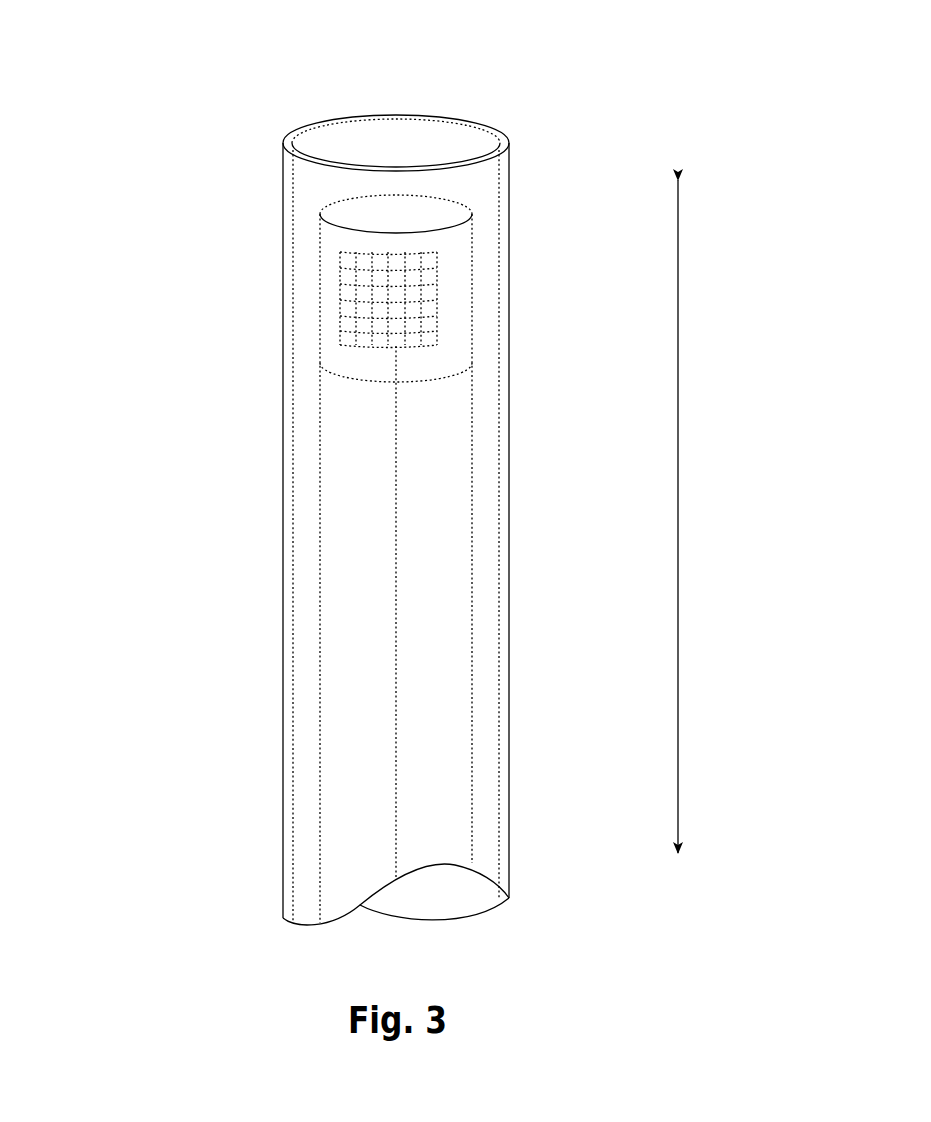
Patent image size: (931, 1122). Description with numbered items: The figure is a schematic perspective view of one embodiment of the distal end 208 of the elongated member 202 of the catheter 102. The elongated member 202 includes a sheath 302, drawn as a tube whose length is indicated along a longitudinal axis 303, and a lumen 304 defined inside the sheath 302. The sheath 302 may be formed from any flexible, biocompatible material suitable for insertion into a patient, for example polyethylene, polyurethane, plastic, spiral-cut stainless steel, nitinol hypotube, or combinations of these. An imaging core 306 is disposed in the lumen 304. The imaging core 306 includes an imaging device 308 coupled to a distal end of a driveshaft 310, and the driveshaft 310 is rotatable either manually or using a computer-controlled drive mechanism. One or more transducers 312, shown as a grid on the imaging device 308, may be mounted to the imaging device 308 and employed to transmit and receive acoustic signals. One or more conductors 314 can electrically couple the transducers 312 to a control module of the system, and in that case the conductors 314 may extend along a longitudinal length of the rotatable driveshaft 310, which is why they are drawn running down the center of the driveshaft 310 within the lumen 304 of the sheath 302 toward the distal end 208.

The catheter 102 is at (97, 137).
The elongated member 202 is at (212, 212).
The distal end 208 is at (152, 450).
The sheath 302 is at (509, 678).
The longitudinal axis 303 is at (678, 456).
The lumen 304 is at (310, 632).
The imaging core 306 is at (483, 497).
The imaging device 308 is at (335, 350).
The driveshaft 310 is at (342, 512).
The transducers 312 is at (442, 300).
The conductors 314 is at (396, 723).